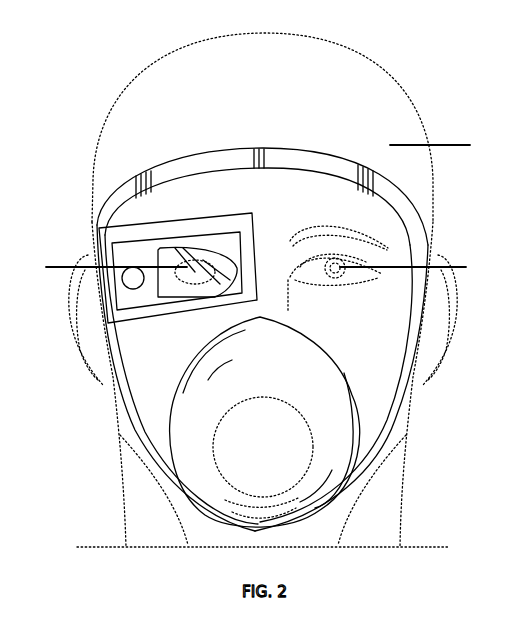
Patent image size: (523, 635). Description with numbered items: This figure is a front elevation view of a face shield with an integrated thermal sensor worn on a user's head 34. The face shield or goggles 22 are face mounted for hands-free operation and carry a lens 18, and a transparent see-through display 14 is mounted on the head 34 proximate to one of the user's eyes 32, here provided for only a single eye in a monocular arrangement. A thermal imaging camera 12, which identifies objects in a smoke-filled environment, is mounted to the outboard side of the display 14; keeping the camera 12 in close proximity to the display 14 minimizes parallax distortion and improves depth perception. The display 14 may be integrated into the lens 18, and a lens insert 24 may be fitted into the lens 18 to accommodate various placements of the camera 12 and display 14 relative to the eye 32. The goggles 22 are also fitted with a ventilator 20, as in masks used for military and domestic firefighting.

The thermal imaging camera 12 is at (133, 272).
The display 14 is at (187, 290).
The lens 18 is at (317, 187).
The ventilator 20 is at (303, 362).
The face shield or goggles 22 is at (395, 422).
The lens insert 24 is at (105, 243).
The user's eye 32 is at (258, 269).
The user's head 34 is at (442, 147).